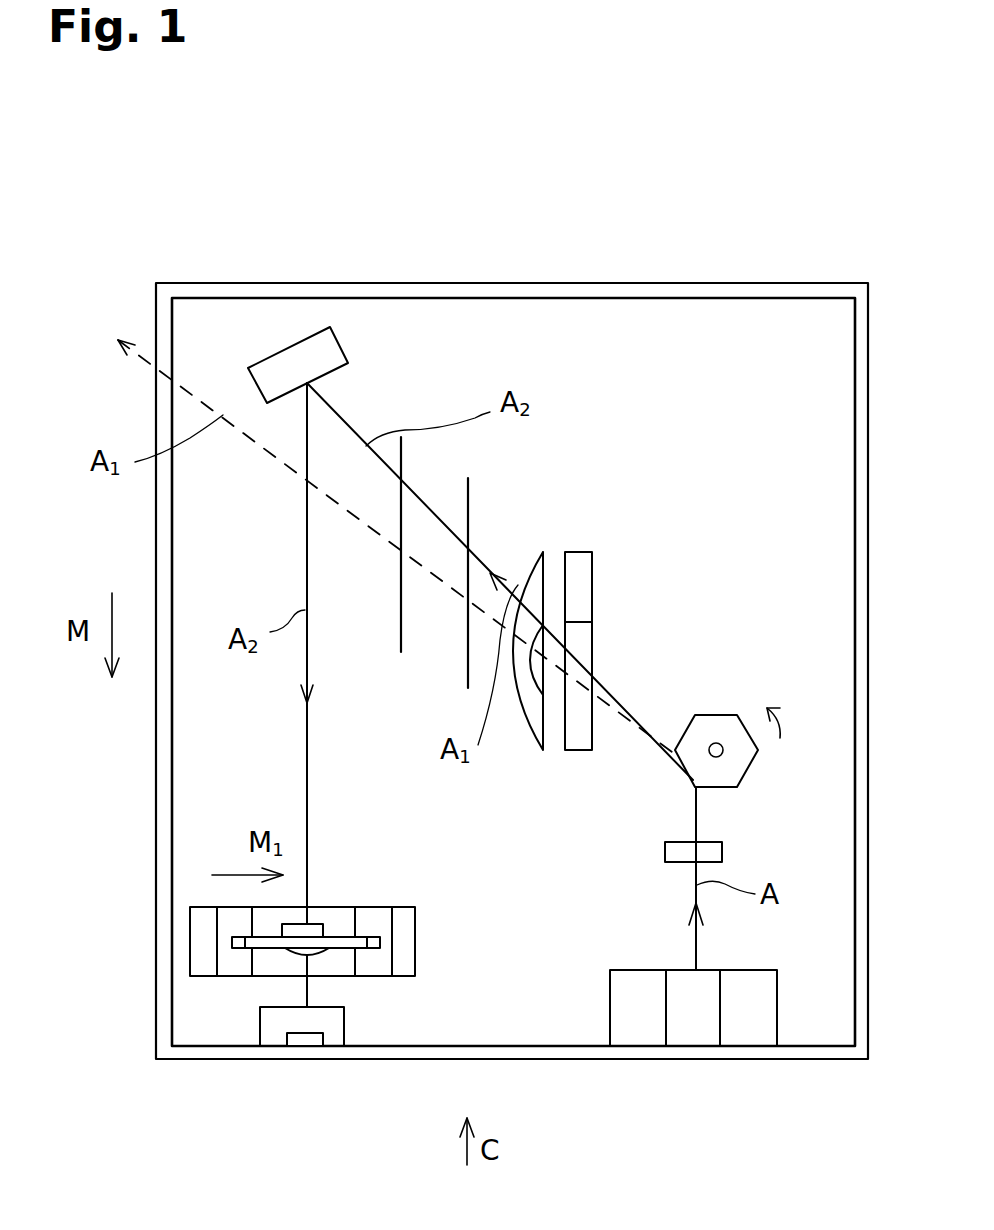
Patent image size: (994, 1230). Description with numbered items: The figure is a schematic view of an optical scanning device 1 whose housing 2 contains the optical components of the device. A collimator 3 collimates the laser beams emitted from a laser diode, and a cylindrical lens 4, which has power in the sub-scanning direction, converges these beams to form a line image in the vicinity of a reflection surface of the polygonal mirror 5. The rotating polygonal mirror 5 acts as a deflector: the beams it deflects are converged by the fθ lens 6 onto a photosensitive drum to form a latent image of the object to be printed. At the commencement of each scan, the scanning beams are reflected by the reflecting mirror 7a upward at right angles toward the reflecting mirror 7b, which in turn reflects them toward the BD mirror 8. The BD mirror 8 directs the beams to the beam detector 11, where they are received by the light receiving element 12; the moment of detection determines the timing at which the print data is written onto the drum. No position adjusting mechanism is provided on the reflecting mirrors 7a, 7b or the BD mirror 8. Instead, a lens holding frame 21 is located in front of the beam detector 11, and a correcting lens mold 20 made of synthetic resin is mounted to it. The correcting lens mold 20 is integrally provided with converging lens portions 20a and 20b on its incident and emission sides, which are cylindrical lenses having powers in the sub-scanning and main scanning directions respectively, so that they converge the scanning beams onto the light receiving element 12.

The optical scanning device 1 is at (232, 272).
The housing 2 is at (868, 480).
The collimator 3 is at (778, 1000).
The cylindrical lens 4 is at (722, 852).
The polygonal mirror 5 is at (710, 714).
The fθ lens 6 is at (612, 571).
The reflecting mirror 7a is at (468, 515).
The reflecting mirror 7b is at (401, 470).
The BD mirror 8 is at (330, 358).
The beam detector 11 is at (262, 1018).
The light receiving element 12 is at (325, 1040).
The correcting lens mold 20 is at (332, 928).
The converging lens portion 20a is at (312, 930).
The converging lens portion 20b is at (305, 950).
The lens holding frame 21 is at (407, 906).